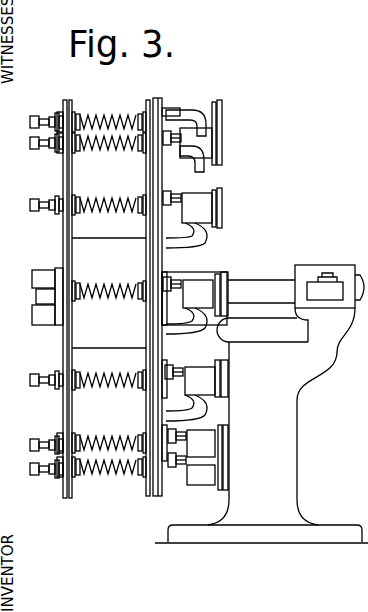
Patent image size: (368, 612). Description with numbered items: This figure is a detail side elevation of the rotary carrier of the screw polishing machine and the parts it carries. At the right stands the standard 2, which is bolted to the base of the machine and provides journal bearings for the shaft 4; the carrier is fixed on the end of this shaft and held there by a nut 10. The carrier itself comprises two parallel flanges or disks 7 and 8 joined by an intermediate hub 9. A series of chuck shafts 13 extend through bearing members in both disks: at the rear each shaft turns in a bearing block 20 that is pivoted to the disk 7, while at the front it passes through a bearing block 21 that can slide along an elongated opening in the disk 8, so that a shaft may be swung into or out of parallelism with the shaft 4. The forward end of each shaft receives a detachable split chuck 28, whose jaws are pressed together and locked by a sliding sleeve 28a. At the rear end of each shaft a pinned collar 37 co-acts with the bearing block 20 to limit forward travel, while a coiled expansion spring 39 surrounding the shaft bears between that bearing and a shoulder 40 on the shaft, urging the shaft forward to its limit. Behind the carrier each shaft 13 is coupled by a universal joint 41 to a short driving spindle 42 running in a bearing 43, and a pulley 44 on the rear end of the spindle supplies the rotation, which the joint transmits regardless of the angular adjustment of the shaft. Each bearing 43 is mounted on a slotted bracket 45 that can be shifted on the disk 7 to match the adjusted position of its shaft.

The standard 2 is at (261, 404).
The shaft 4 is at (250, 283).
The disk 7 is at (151, 240).
The disk 8 is at (65, 240).
The hub 9 is at (95, 241).
The nut 10 is at (41, 318).
The shaft 13 is at (115, 114).
The bearing block 20 is at (151, 110).
The bearing block 21 is at (63, 163).
The chuck 28 is at (60, 392).
The sliding sleeve 28a is at (40, 376).
The collar 37 is at (165, 282).
The coiled expansion spring 39 is at (95, 112).
The shoulder 40 is at (88, 288).
The universal joint 41 is at (171, 152).
The driving spindle 42 is at (188, 218).
The bearing 43 is at (199, 194).
The pulley 44 is at (222, 208).
The bracket 45 is at (198, 233).